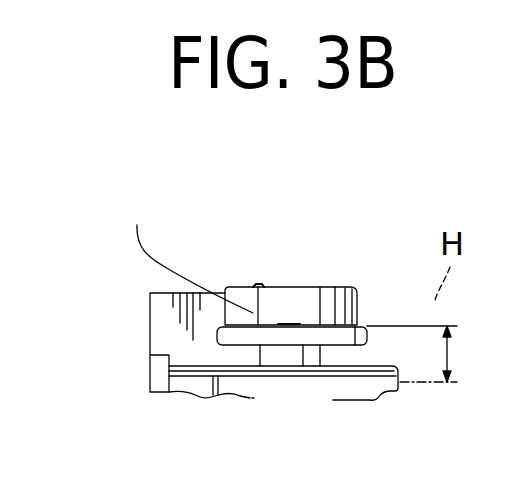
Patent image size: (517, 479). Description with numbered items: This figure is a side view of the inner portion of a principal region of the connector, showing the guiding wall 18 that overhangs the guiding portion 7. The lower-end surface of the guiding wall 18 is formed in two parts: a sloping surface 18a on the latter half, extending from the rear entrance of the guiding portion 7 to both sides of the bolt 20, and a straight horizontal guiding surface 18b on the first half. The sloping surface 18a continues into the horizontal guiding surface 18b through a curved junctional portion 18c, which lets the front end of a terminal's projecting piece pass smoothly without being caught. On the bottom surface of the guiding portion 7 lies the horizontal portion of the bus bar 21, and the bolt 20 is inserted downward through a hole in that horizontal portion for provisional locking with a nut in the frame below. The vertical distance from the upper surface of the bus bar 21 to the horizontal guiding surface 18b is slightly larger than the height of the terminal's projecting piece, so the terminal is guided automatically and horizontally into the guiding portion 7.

The guiding portion 7 is at (100, 249).
The guiding wall 18 is at (179, 243).
The sloping surface 18a is at (170, 267).
The horizontal guiding surface 18b is at (435, 300).
The curved junctional portion 18c is at (291, 318).
The bolt 20 is at (345, 287).
The bus bar 21 is at (340, 366).